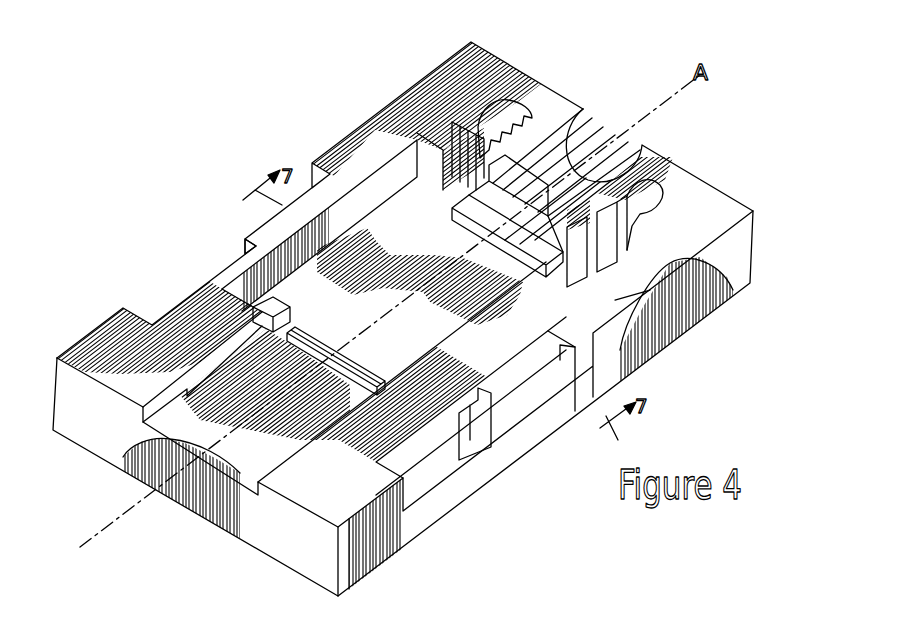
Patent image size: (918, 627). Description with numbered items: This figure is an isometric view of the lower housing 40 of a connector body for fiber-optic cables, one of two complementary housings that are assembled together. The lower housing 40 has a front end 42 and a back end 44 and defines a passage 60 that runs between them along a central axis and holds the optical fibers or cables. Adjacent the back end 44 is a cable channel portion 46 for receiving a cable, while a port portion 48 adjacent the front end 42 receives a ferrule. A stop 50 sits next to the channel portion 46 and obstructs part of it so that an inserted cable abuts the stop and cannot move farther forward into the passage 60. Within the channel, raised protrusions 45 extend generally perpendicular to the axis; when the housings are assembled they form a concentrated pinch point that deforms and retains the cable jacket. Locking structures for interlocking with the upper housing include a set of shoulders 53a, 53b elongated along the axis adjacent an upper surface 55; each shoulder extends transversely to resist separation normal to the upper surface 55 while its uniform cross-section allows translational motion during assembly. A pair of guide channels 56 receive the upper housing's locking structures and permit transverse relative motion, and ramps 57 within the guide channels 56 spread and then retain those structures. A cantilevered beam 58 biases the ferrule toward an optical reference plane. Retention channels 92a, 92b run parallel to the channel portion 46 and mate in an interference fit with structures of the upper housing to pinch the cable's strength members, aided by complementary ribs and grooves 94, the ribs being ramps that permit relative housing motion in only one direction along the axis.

The lower housing 40 is at (722, 290).
The front end 42 is at (318, 536).
The back end 44 is at (729, 194).
The raised protrusions 45 is at (520, 190).
The cable channel portion 46 is at (583, 150).
The port portion 48 is at (240, 448).
The stop 50 is at (452, 202).
The shoulder 53a is at (560, 375).
The shoulder 53b is at (262, 236).
The upper surface 55 is at (610, 297).
The guide channels 56 is at (157, 314).
The ramps 57 is at (232, 263).
The cantilevered beam 58 is at (300, 345).
The passage 60 is at (420, 343).
The retention channel 92a is at (625, 208).
The retention channel 92b is at (508, 115).
The ribs and grooves 94 is at (472, 125).